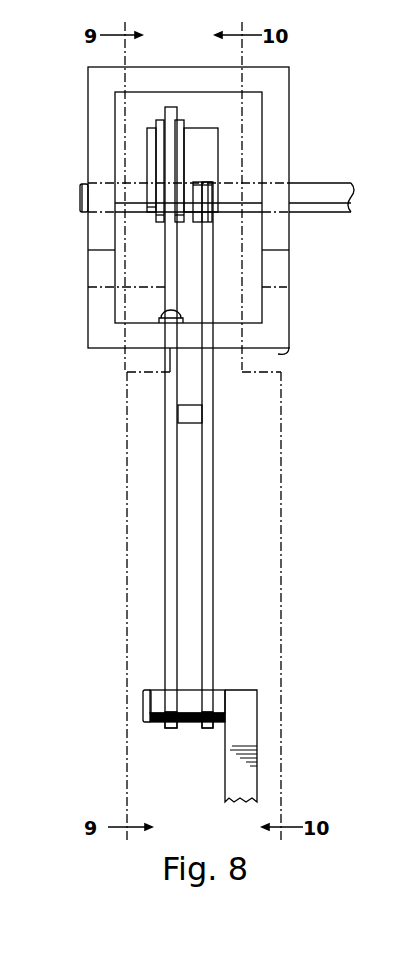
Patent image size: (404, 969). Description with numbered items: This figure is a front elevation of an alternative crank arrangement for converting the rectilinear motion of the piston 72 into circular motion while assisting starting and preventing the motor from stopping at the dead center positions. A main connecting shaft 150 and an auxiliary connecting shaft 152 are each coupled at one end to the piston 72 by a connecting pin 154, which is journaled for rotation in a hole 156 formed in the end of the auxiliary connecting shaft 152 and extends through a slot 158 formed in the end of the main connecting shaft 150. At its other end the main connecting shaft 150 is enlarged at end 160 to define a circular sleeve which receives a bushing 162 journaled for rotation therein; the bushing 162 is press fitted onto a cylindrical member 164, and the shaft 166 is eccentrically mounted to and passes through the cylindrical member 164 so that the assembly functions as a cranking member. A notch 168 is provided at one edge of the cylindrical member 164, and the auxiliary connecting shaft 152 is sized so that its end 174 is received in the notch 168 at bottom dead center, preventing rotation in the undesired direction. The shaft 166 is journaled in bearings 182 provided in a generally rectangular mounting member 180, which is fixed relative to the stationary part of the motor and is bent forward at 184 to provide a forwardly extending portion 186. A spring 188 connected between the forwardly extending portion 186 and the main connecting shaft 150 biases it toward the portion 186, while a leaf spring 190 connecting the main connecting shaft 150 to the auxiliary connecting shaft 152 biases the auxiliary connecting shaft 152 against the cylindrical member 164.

The piston 72 is at (225, 776).
The main connecting shaft 150 is at (165, 470).
The auxiliary connecting shaft 152 is at (232, 468).
The connecting pin 154 is at (143, 720).
The hole 156 is at (207, 703).
The slot 158 is at (167, 685).
The enlarged end 160 is at (168, 104).
The bushing 162 is at (181, 119).
The cylindrical member 164 is at (218, 128).
The shaft 166 is at (80, 188).
The notch 168 is at (205, 182).
The end of auxiliary connecting shaft 174 is at (208, 216).
The mounting member 180 is at (290, 104).
The bearings 182 is at (280, 177).
The bend 184 is at (288, 248).
The forwardly extending portion 186 is at (300, 348).
The spring 188 is at (158, 321).
The leaf spring 190 is at (192, 405).